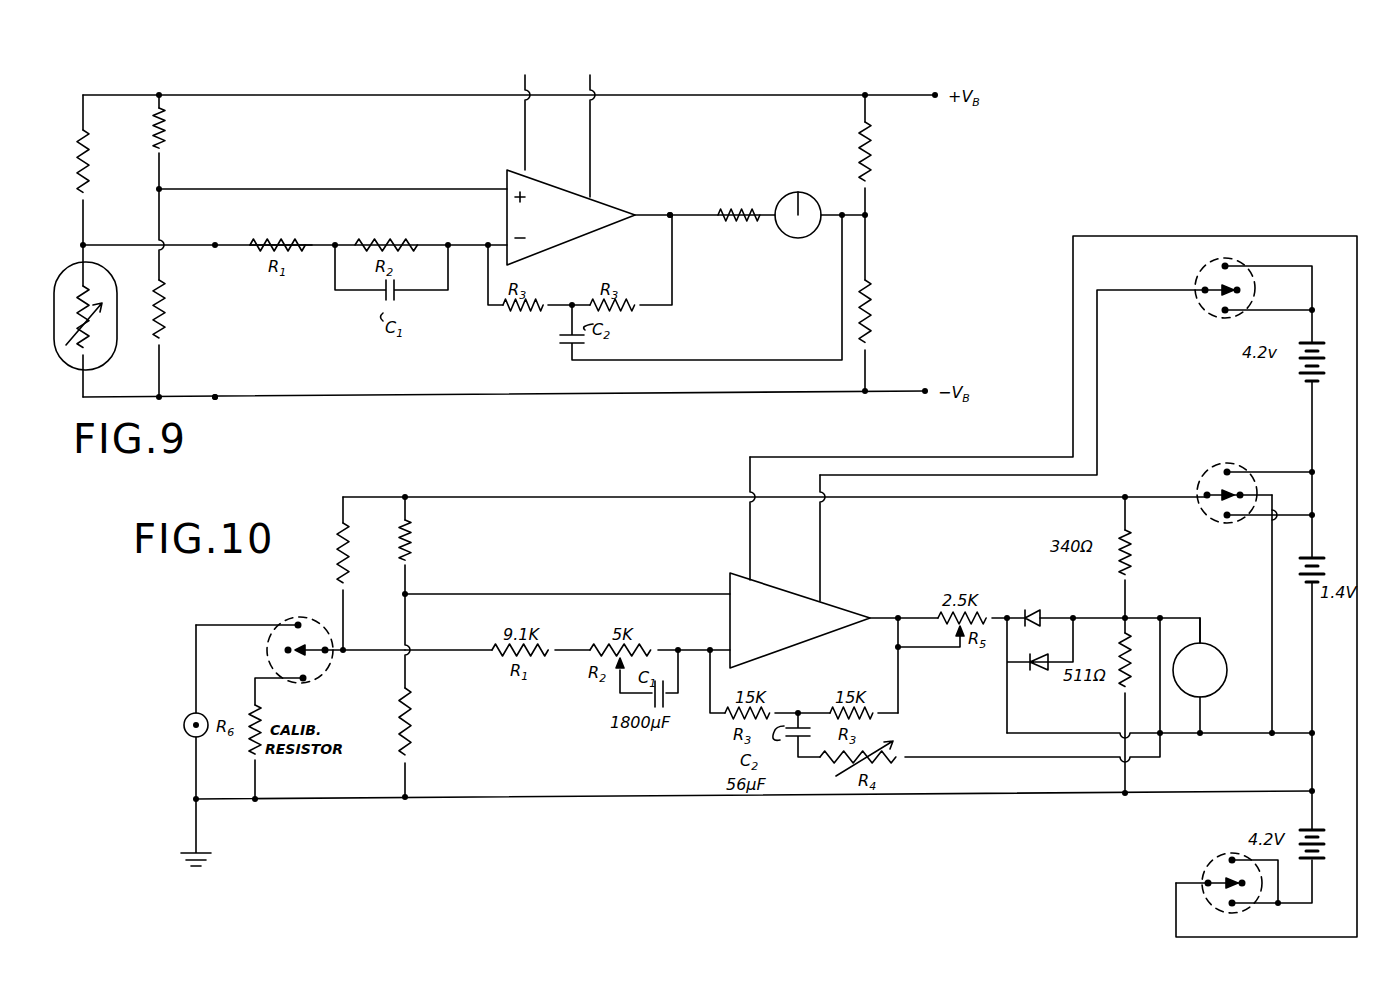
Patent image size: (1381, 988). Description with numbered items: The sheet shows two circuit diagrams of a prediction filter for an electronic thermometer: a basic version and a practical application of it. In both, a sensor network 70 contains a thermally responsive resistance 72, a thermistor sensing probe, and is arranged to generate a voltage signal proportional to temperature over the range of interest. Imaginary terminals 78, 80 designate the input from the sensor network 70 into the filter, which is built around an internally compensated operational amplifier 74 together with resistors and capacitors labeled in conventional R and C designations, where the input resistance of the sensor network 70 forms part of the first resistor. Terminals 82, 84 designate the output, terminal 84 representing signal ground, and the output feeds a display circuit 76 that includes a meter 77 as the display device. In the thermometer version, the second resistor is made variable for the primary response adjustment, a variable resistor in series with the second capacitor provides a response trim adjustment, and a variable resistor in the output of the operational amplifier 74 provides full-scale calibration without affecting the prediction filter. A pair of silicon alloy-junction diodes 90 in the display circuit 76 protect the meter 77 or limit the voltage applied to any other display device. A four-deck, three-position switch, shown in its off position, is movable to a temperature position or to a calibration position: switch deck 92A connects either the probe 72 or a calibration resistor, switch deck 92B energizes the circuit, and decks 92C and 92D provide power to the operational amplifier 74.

In FIG. 9, the sensor network 70 is at (72, 90).
In FIG. 10, the sensor network 70 is at (415, 490).
In FIG. 9, the thermally responsive resistance 72 is at (63, 259).
In FIG. 10, the thermally responsive resistance 72 is at (183, 704).
In FIG. 9, the operational amplifier 74 is at (502, 166).
In FIG. 10, the operational amplifier 74 is at (728, 567).
In FIG. 9, the display circuit 76 is at (779, 243).
In FIG. 10, the display circuit 76 is at (1231, 705).
In FIG. 9, the meter 77 is at (798, 190).
In FIG. 10, the meter 77 is at (1205, 645).
In FIG. 9, the terminal 78 is at (215, 250).
In FIG. 9, the terminal 80 is at (215, 392).
In FIG. 9, the terminal 82 is at (690, 222).
In FIG. 9, the terminal 84 is at (842, 212).
In FIG. 10, the silicon alloy-junction diodes 90 is at (1019, 613).
In FIG. 10, the switch deck 92A is at (333, 682).
In FIG. 10, the switch deck 92B is at (1202, 475).
In FIG. 10, the switch deck 92C is at (1190, 304).
In FIG. 10, the switch deck 92D is at (1204, 860).